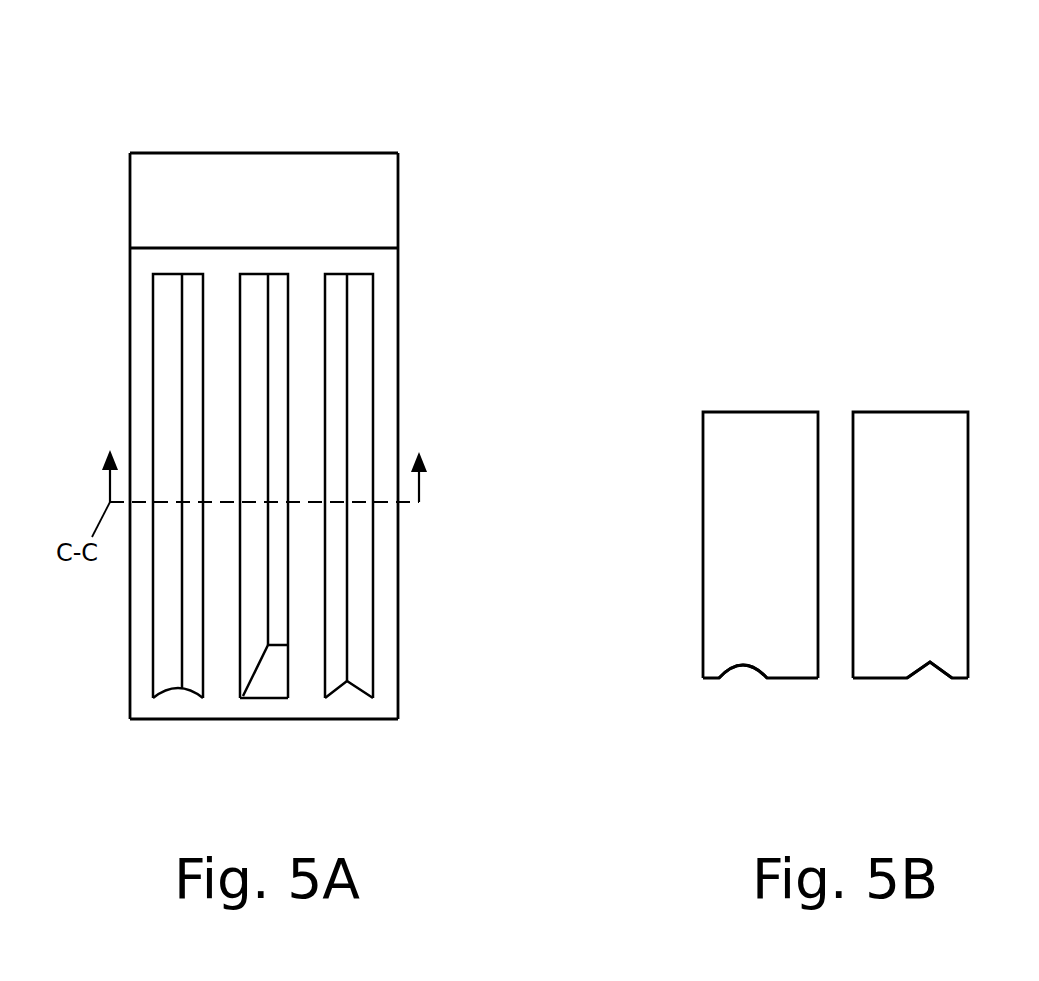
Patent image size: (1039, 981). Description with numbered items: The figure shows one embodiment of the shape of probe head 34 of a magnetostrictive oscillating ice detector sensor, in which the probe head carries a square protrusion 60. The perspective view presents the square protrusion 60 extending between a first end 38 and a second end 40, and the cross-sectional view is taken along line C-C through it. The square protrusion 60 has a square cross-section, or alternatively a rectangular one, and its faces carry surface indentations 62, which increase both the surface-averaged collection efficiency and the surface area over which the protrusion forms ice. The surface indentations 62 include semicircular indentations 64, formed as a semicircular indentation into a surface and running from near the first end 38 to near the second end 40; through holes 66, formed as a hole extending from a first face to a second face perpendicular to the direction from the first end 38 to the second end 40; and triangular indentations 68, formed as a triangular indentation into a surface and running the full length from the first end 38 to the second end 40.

In FIG. 5A, the square protrusion 60 is at (505, 73).
In FIG. 5B, the square protrusion 60 is at (992, 312).
In FIG. 5A, the probe head 34 is at (163, 193).
In FIG. 5B, the probe head 34 is at (747, 443).
In FIG. 5A, the first end 38 is at (398, 153).
In FIG. 5A, the second end 40 is at (398, 719).
In FIG. 5A, the semicircular indentations 64 is at (170, 332).
In FIG. 5B, the semicircular indentations 64 is at (741, 670).
In FIG. 5A, the through holes 66 is at (278, 283).
In FIG. 5B, the through holes 66 is at (837, 418).
In FIG. 5A, the triangular indentations 68 is at (362, 352).
In FIG. 5B, the triangular indentations 68 is at (942, 678).
In FIG. 5A, the surface indentations 62 is at (350, 691).
In FIG. 5B, the surface indentations 62 is at (925, 675).